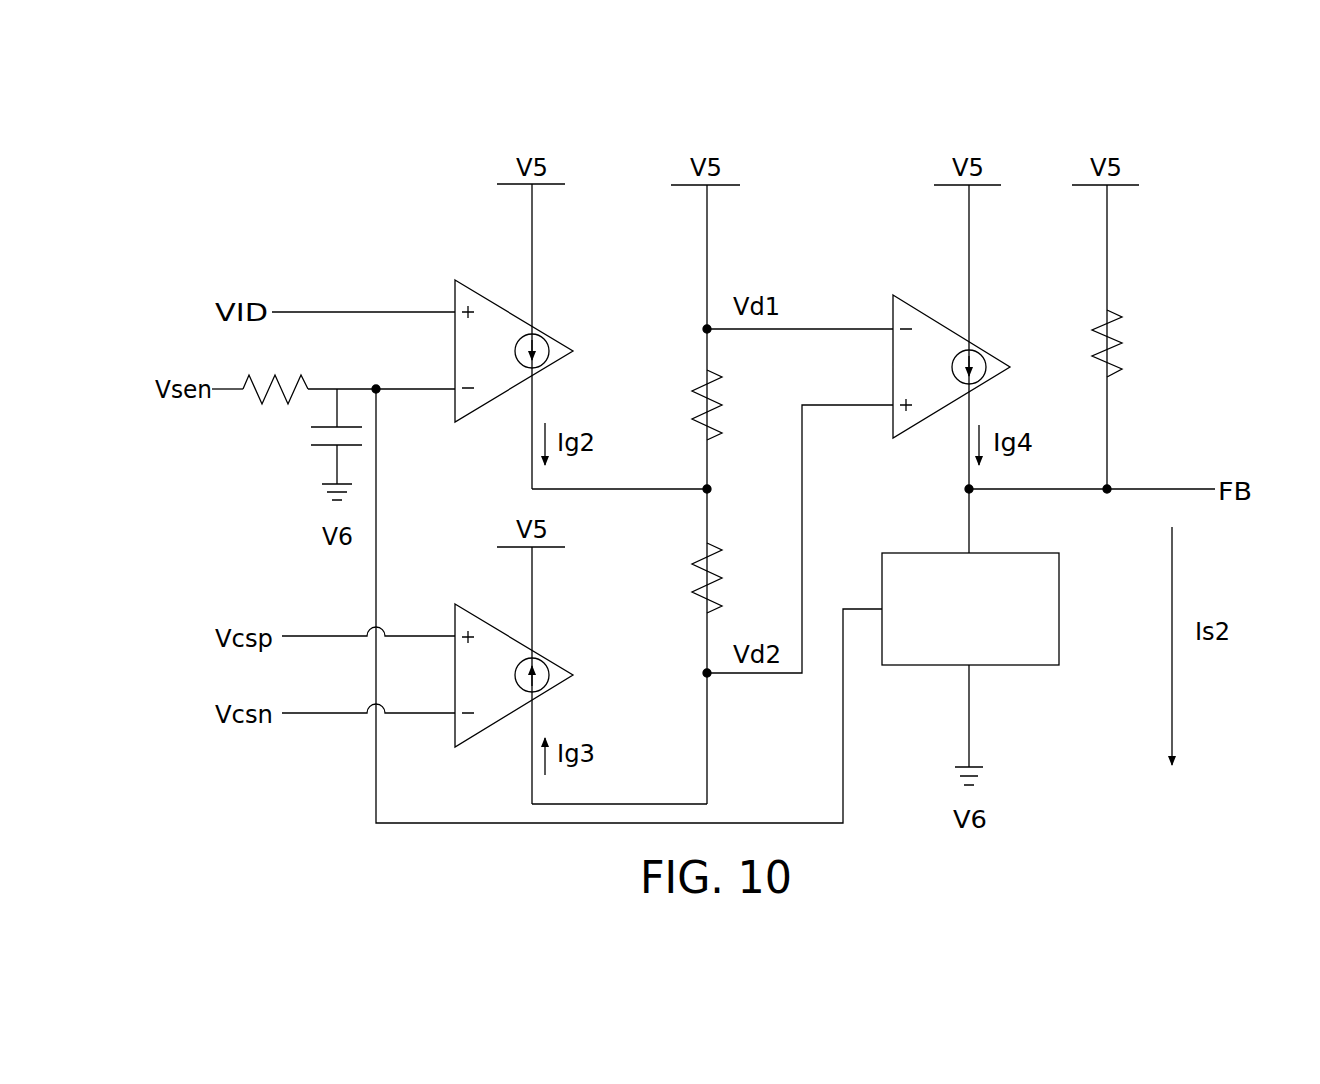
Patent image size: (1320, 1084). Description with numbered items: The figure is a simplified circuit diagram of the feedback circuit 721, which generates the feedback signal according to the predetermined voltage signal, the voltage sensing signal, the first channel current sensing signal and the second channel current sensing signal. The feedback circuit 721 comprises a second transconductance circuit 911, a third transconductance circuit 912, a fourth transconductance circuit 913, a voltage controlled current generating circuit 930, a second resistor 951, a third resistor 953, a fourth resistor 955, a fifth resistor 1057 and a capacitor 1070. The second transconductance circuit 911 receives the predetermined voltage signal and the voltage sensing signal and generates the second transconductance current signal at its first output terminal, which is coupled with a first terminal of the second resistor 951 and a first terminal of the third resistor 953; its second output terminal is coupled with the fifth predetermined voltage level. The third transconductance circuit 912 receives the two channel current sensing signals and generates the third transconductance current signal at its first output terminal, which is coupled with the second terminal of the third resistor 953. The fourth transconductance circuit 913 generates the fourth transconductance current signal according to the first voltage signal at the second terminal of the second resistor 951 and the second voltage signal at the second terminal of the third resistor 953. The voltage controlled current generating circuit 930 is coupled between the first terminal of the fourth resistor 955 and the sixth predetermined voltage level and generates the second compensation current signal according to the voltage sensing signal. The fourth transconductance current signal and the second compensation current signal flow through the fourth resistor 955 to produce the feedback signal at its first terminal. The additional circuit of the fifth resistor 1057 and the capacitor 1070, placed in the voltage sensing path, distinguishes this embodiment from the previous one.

The feedback circuit 721 is at (308, 188).
The second transconductance circuit 911 is at (513, 392).
The third transconductance circuit 912 is at (514, 639).
The fourth transconductance circuit 913 is at (955, 330).
The second resistor 951 is at (688, 406).
The third resistor 953 is at (690, 580).
The fourth resistor 955 is at (1090, 344).
The voltage controlled current generating circuit 930 is at (1059, 609).
The fifth resistor 1057 is at (241, 410).
The capacitor 1070 is at (303, 443).